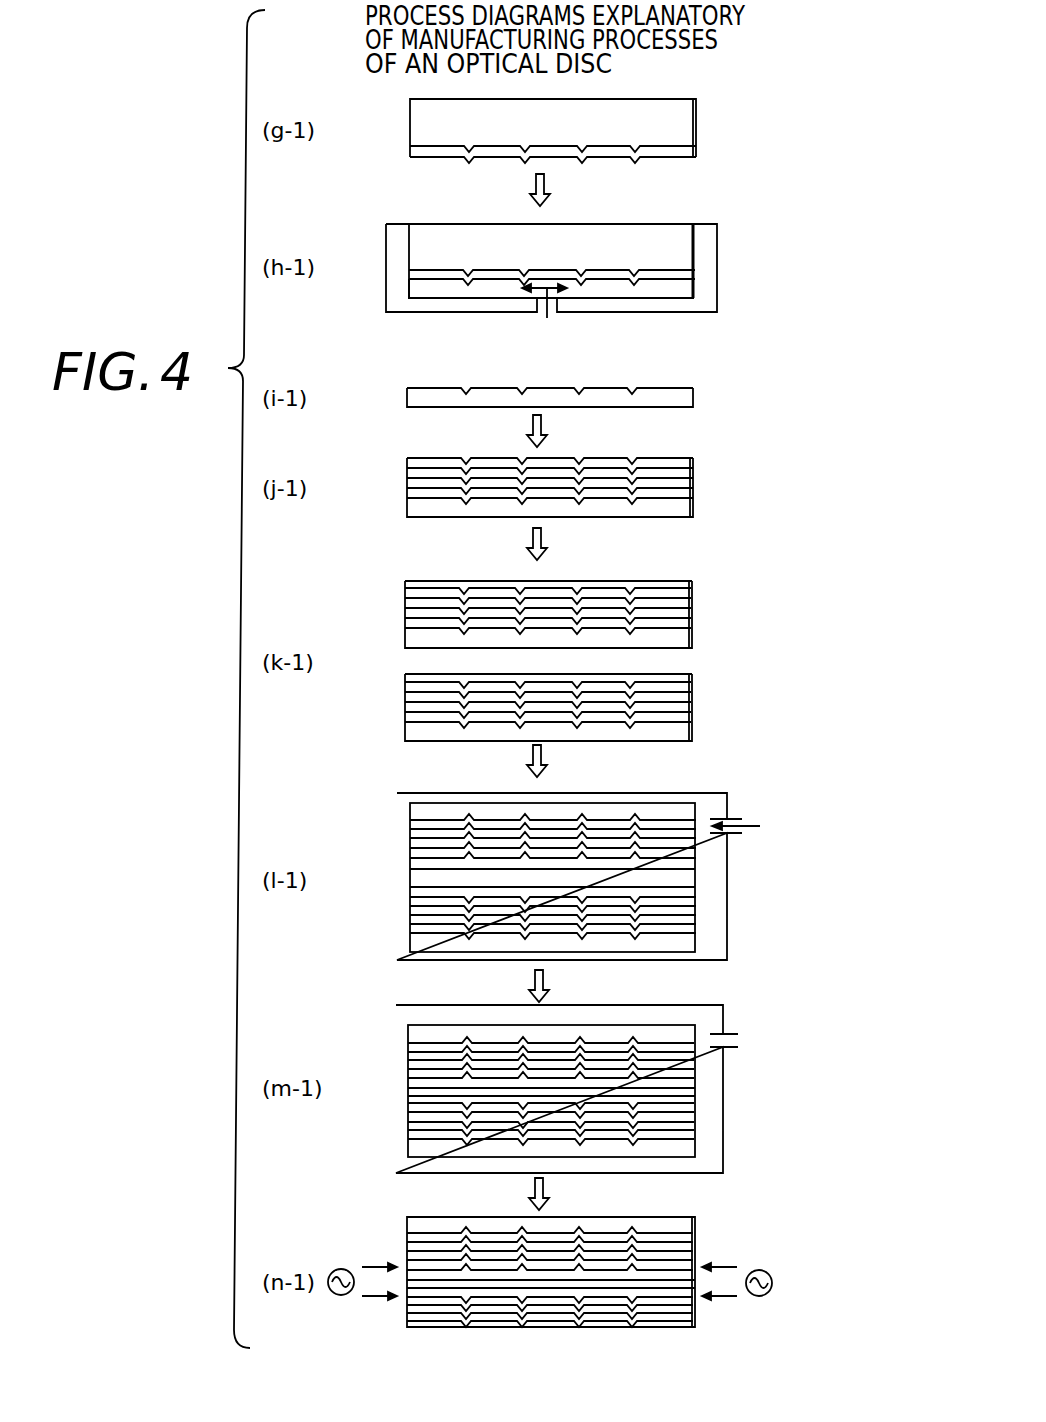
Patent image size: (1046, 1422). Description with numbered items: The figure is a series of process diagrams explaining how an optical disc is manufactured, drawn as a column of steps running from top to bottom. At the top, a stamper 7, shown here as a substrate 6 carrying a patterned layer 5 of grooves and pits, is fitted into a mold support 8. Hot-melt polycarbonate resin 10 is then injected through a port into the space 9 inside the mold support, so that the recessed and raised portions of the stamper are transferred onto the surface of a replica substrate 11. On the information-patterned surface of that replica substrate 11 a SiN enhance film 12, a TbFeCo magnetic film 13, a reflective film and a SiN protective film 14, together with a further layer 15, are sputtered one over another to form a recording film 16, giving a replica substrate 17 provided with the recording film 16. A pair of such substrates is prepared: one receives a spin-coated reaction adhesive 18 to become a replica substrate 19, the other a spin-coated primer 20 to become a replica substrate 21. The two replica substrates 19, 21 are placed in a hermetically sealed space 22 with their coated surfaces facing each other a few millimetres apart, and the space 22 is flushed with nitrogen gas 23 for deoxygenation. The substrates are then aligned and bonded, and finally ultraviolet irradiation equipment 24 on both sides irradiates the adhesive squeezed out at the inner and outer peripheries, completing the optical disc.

The photoresist layer with pits 5 is at (672, 150).
The glass substrate 6 is at (670, 128).
The stamper 7 is at (604, 125).
The mold support 8 is at (707, 250).
The space 9 is at (675, 290).
The hot-melt polycarbonate resin 10 is at (548, 318).
The replica substrate 11 is at (667, 397).
The SiN enhance film 12 is at (594, 489).
The TbFeCo magnetic film 13 is at (677, 482).
The SiN protective film 14 is at (678, 472).
The reflective layer 15 is at (680, 462).
The recording film 16 is at (613, 456).
The replica substrate provided with recording film 17 is at (630, 465).
The reaction adhesive 18 is at (680, 580).
The replica substrate provided with adhesive 19 is at (589, 593).
The primer 20 is at (678, 674).
The replica substrate provided with primer 21 is at (589, 687).
The hermetically sealed space 22 is at (723, 793).
The nitrogen gas 23 is at (760, 826).
The ultraviolet irradiation equipment 24 is at (769, 1272).